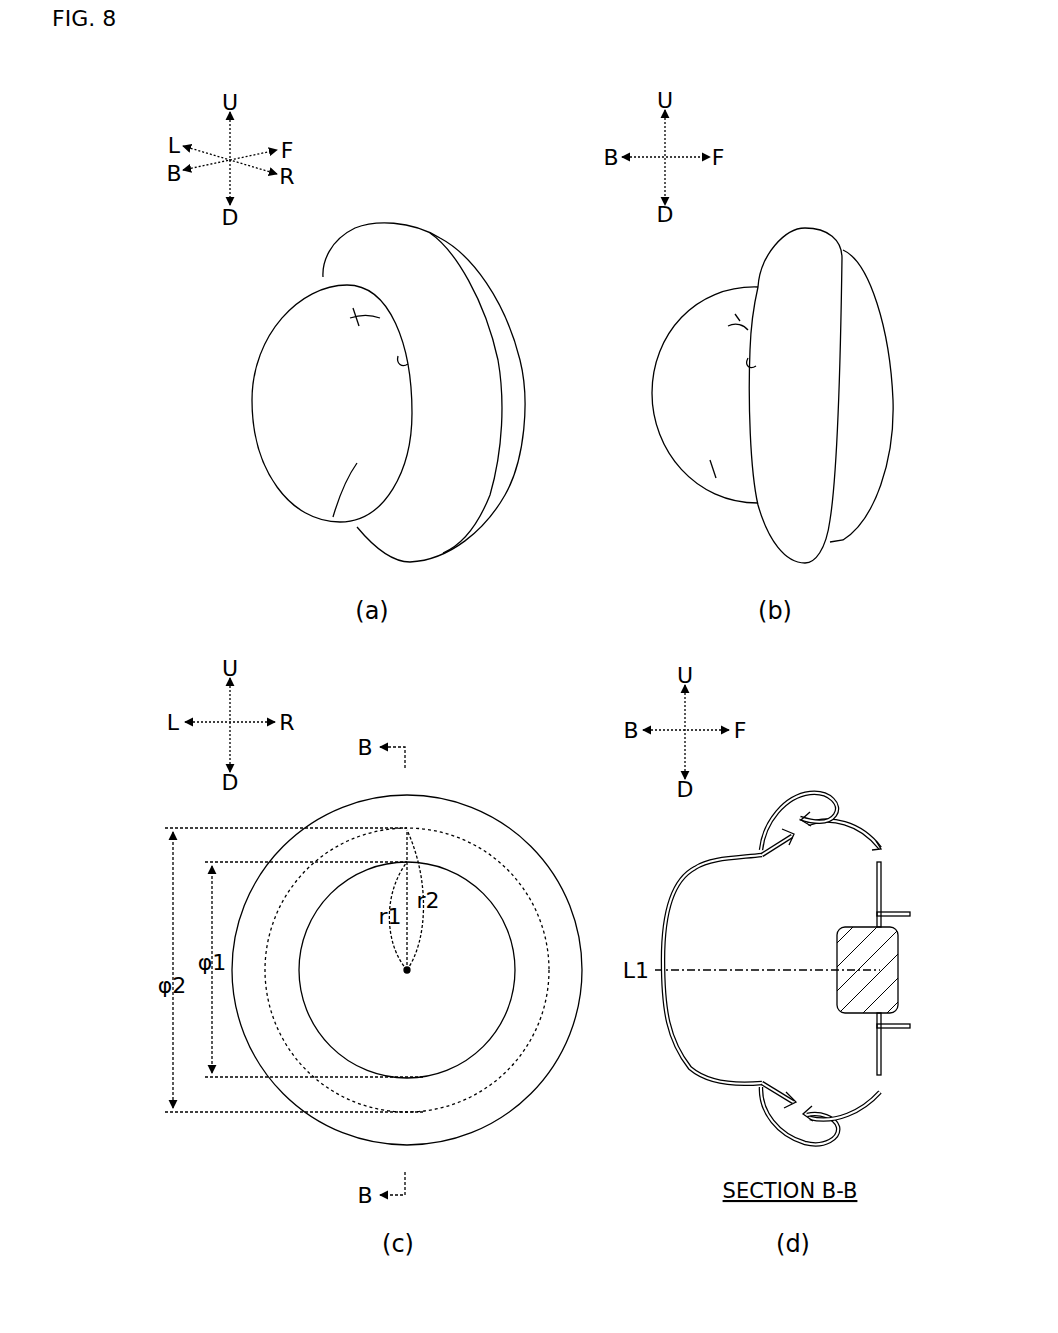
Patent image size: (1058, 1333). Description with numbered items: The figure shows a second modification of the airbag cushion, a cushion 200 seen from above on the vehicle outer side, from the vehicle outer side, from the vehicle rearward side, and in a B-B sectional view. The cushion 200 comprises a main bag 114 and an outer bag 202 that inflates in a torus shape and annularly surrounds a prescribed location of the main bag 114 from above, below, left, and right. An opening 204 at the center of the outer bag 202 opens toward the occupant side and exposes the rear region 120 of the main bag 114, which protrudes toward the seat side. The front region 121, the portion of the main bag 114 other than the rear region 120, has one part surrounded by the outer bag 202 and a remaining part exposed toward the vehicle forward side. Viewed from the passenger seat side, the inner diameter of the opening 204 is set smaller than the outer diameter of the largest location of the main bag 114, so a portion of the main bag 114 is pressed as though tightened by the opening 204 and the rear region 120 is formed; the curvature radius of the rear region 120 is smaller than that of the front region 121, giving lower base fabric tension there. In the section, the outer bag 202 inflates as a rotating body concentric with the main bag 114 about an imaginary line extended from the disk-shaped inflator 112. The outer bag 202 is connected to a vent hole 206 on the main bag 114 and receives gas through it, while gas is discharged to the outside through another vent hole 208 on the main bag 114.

The cushion 200 is at (462, 212).
The outer bag 202 is at (381, 238).
The opening 204 is at (406, 357).
The vent hole 206 is at (800, 822).
The vent hole 208 is at (884, 849).
The rear region 120 is at (262, 362).
The main bag 114 is at (297, 300).
The front region 121 is at (487, 268).
The inflator 112 is at (900, 950).